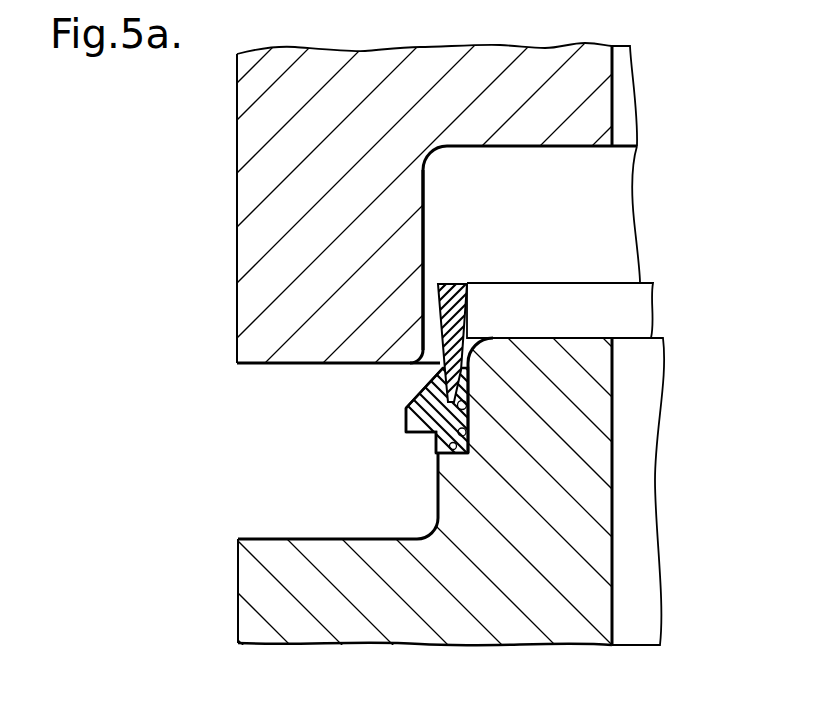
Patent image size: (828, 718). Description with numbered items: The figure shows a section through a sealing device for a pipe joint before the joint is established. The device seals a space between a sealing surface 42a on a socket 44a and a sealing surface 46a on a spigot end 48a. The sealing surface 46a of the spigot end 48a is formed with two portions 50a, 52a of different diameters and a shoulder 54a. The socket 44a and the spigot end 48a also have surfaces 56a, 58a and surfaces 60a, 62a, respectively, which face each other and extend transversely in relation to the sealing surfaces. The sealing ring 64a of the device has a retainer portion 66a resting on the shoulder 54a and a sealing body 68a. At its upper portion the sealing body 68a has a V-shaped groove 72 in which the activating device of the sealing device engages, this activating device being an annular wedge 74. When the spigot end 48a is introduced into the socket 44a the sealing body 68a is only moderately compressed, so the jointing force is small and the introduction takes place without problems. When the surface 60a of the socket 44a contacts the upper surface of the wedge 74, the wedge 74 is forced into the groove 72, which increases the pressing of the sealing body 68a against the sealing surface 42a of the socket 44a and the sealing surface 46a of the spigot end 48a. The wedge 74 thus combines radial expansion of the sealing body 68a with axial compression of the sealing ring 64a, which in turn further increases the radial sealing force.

The sealing surface 42a is at (426, 232).
The socket 44a is at (462, 76).
The sealing surface 46a is at (468, 448).
The spigot end 48a is at (562, 612).
The portion 50a is at (468, 417).
The portion 52a is at (438, 493).
The shoulder 54a is at (440, 443).
The surface 56a is at (313, 366).
The surface 58a is at (281, 538).
The surface 60a is at (526, 148).
The surface 62a is at (550, 338).
The sealing ring 64a is at (406, 427).
The retainer portion 66a is at (433, 440).
The sealing body 68a is at (408, 402).
The V-shaped groove 72 is at (427, 378).
The annular wedge 74 is at (470, 330).